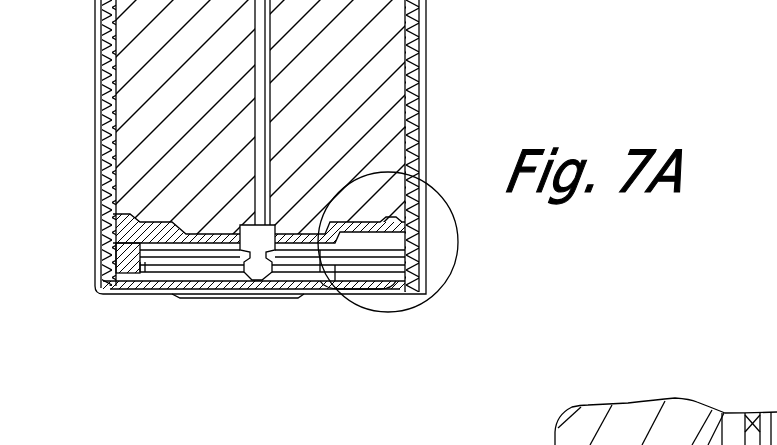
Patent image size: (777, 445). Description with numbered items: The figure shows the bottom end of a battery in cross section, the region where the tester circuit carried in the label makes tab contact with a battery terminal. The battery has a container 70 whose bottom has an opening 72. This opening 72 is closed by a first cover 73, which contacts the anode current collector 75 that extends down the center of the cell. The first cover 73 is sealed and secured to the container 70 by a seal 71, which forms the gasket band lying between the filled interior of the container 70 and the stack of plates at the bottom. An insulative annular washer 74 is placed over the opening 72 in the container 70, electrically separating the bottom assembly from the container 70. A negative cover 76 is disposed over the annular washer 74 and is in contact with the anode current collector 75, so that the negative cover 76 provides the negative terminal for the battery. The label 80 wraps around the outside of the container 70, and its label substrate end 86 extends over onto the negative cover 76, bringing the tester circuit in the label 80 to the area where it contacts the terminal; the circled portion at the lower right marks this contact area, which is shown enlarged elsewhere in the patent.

The container 70 is at (108, 44).
The label 80 is at (427, 60).
The seal 71 is at (128, 238).
The insulative annular washer 74 is at (97, 250).
The opening 72 is at (148, 294).
The first cover 73 is at (300, 247).
The anode current collector 75 is at (244, 307).
The negative cover 76 is at (346, 296).
The label substrate end 86 is at (405, 294).